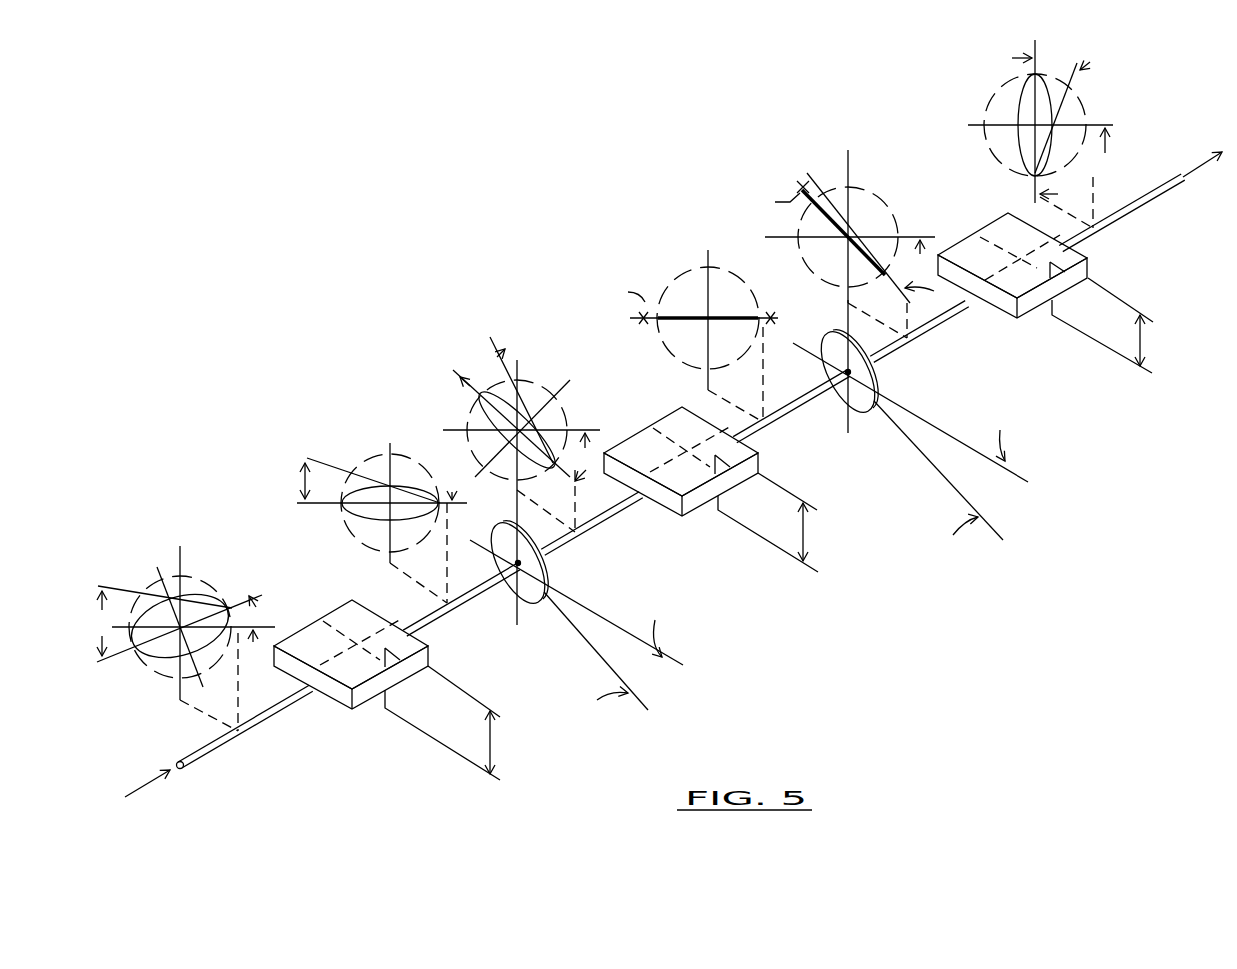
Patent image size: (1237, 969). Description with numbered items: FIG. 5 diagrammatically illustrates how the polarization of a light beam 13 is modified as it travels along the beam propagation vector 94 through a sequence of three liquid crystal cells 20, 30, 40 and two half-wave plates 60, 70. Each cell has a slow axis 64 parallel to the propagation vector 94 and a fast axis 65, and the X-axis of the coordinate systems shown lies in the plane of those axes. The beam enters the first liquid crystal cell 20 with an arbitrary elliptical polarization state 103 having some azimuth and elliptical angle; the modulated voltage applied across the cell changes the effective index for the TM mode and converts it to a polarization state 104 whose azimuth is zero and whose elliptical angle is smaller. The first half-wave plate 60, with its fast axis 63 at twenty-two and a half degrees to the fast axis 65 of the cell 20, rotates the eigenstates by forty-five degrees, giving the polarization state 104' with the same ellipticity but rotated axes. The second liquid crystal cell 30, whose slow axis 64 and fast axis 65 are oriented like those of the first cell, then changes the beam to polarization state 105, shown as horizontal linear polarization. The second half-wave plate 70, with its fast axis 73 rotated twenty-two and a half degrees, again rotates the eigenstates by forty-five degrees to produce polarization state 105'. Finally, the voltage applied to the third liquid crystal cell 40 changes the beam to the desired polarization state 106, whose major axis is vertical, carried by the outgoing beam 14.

The light beam 13 is at (267, 720).
The outgoing beam 14 is at (1163, 195).
The first liquid crystal cell 20 is at (430, 657).
The second liquid crystal cell 30 is at (760, 460).
The third liquid crystal cell 40 is at (1092, 267).
The first half-wave plate 60 is at (547, 567).
The fast axis of first half-wave plate 63 is at (530, 585).
The slow axis 64 is at (375, 632).
The fast axis 65 is at (327, 630).
The second half-wave plate 70 is at (878, 375).
The fast axis of second half-wave plate 73 is at (865, 397).
The beam propagation vector 94 is at (148, 784).
The elliptical polarization state 103 is at (195, 584).
The polarization state after first cell 104 is at (389, 512).
The rotated polarization state 104' is at (517, 434).
The polarization state after second cell 105 is at (700, 325).
The rotated polarization state 105' is at (854, 233).
The desired polarization state 106 is at (1018, 108).